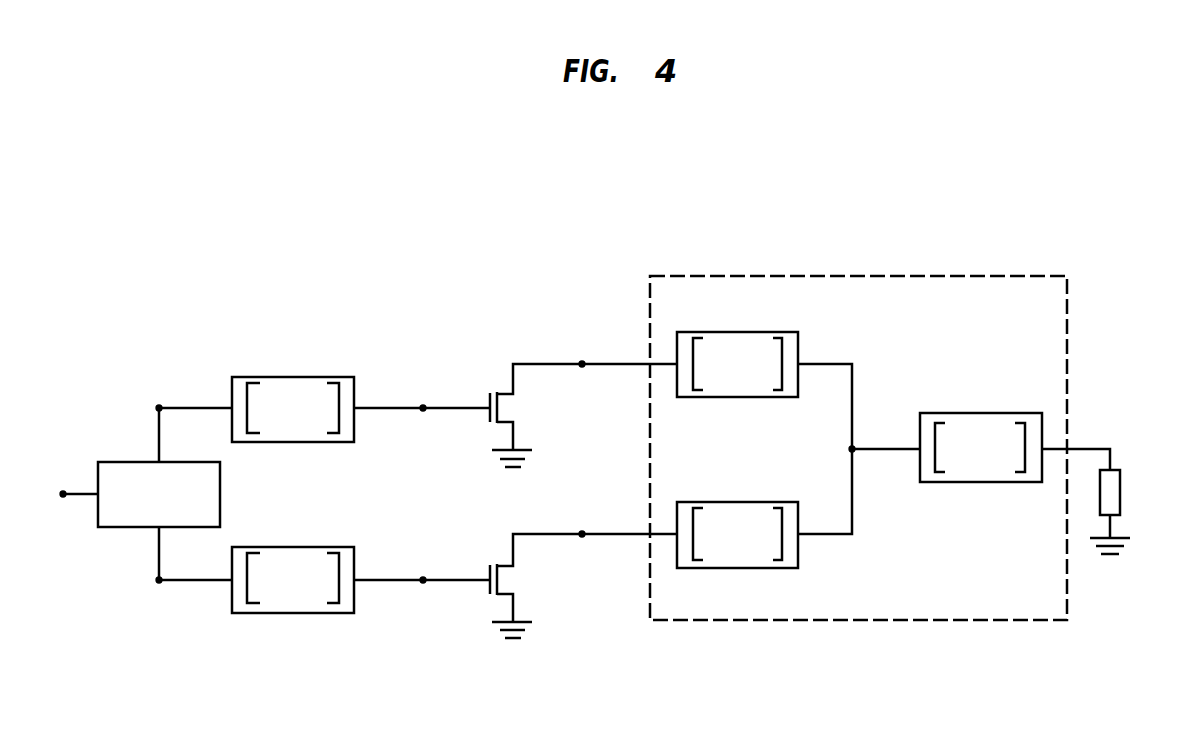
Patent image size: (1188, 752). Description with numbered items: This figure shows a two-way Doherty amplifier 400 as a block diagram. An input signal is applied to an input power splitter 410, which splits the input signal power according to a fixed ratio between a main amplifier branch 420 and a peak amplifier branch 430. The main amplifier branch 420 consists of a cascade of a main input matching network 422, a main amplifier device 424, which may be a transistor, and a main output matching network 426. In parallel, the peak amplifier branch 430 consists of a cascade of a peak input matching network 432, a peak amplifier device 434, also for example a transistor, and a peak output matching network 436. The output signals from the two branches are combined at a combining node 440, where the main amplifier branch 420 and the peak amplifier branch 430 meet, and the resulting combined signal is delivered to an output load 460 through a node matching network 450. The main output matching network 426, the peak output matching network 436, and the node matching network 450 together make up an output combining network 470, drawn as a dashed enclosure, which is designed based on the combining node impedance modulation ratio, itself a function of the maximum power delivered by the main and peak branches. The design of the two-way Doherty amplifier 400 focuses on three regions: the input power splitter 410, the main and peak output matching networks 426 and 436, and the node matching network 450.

The two-way Doherty amplifier 400 is at (502, 243).
The input power splitter 410 is at (220, 487).
The main amplifier branch 420 is at (375, 318).
The main input matching network 422 is at (315, 375).
The main amplifier device 424 is at (520, 410).
The main output matching network 426 is at (758, 330).
The peak amplifier branch 430 is at (377, 670).
The peak input matching network 432 is at (315, 545).
The peak amplifier device 434 is at (520, 582).
The peak output matching network 436 is at (758, 500).
The combining node 440 is at (856, 447).
The node matching network 450 is at (1000, 413).
The output load 460 is at (1120, 490).
The output combining network 470 is at (1025, 275).